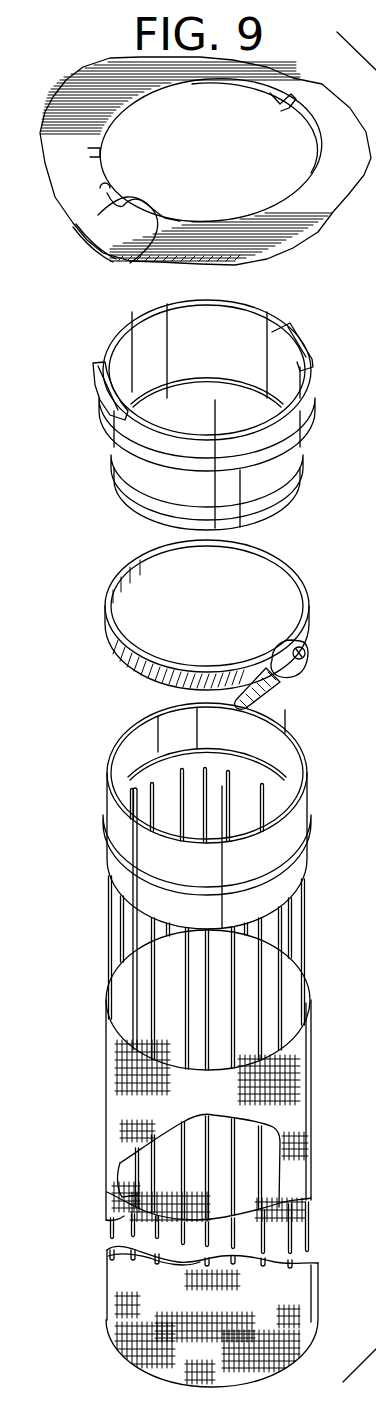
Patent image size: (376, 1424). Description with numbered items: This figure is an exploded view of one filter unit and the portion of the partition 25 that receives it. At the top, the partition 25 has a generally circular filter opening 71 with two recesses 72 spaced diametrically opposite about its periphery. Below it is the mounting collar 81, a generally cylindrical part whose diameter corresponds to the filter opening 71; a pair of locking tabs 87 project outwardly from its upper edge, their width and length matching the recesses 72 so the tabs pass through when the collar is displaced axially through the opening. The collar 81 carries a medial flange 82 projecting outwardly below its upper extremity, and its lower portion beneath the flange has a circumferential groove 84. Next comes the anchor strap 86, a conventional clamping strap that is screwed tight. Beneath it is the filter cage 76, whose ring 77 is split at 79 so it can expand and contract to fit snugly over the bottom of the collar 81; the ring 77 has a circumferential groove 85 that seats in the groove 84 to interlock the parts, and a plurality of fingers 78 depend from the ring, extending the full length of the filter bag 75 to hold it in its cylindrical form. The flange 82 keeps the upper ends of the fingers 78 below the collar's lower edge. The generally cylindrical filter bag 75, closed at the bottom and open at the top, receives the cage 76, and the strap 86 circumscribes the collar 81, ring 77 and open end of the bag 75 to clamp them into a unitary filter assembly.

The partition 25 is at (60, 183).
The filter opening 71 is at (125, 258).
The recesses 72 is at (295, 92).
The filter bag 75 is at (308, 1143).
The filter cage 76 is at (110, 970).
The ring 77 is at (290, 760).
The fingers 78 is at (304, 934).
The split 79 is at (127, 837).
The mounting collar 81 is at (307, 410).
The medial flange 82 is at (306, 428).
The circumferential groove 84 is at (291, 487).
The circumferential groove 85 is at (302, 848).
The anchor strap 86 is at (293, 578).
The locking tabs 87 is at (96, 382).